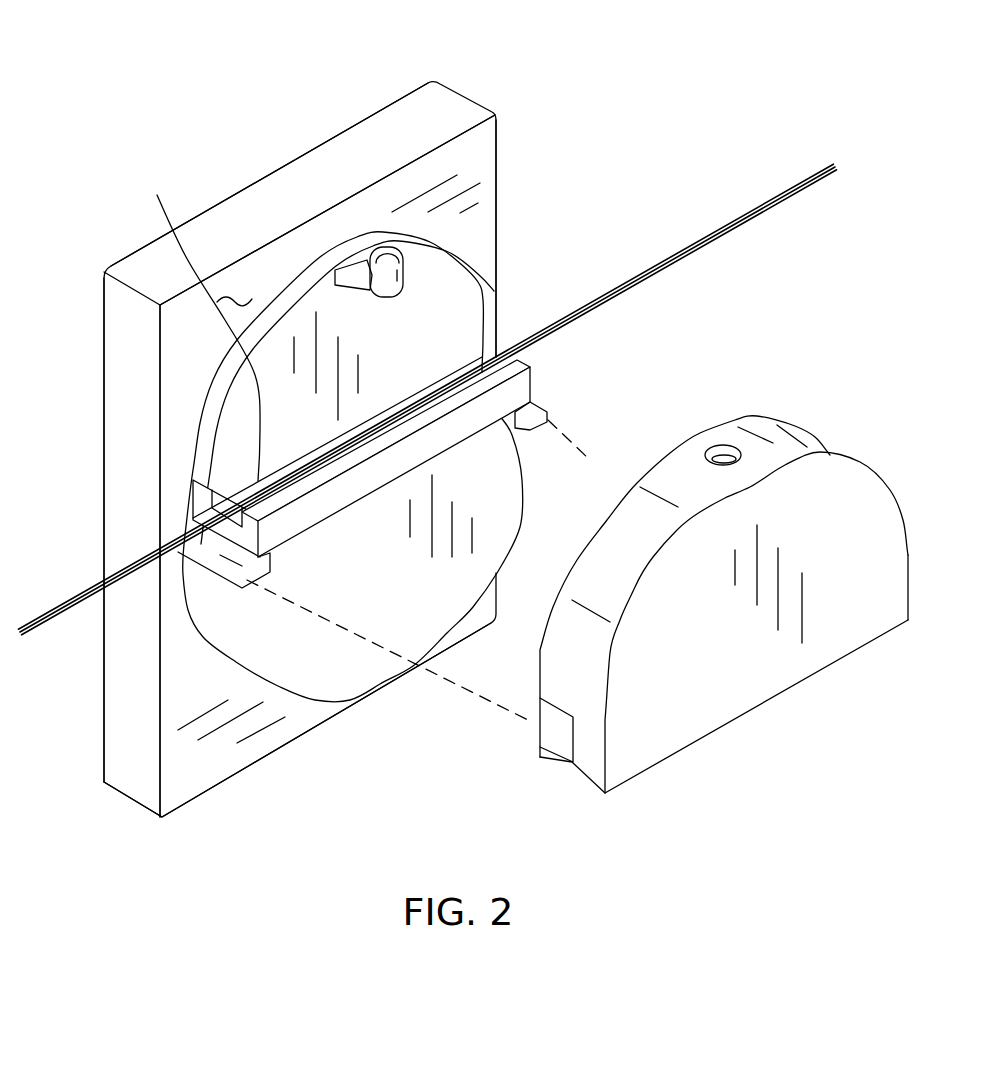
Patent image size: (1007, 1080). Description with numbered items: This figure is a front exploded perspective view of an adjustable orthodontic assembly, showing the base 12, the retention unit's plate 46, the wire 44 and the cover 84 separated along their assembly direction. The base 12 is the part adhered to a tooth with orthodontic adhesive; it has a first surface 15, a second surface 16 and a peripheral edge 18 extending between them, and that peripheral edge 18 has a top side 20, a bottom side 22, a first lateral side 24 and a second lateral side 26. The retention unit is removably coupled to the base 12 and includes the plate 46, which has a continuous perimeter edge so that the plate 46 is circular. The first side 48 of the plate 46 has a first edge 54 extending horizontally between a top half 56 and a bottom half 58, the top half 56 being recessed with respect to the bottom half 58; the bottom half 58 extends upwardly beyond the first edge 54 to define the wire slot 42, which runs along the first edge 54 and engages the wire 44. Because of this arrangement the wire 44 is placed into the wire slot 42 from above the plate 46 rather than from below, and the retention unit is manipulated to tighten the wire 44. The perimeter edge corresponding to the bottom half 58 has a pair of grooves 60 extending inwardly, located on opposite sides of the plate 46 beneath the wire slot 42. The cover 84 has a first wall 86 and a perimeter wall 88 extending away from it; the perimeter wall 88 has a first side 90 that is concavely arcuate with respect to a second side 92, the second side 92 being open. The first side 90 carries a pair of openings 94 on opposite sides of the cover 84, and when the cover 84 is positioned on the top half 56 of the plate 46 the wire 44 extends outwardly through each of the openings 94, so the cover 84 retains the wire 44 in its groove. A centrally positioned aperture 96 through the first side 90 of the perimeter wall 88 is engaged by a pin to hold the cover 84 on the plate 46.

The base 12 is at (463, 97).
The first surface 15 is at (102, 388).
The second surface 16 is at (240, 292).
The peripheral edge 18 is at (130, 521).
The top side 20 is at (403, 130).
The bottom side 22 is at (217, 790).
The first lateral side 24 is at (130, 732).
The second lateral side 26 is at (497, 162).
The wire slot 42 is at (443, 370).
The wire 44 is at (775, 200).
The plate 46 is at (341, 253).
The first side 48 is at (363, 663).
The first edge 54 is at (305, 359).
The top half 56 is at (427, 295).
The bottom half 58 is at (490, 477).
The grooves 60 is at (540, 402).
The cover 84 is at (910, 597).
The first wall 86 is at (823, 640).
The perimeter wall 88 is at (770, 433).
The first side 90 is at (687, 455).
The second side 92 is at (687, 748).
The openings 94 is at (548, 722).
The aperture 96 is at (722, 443).